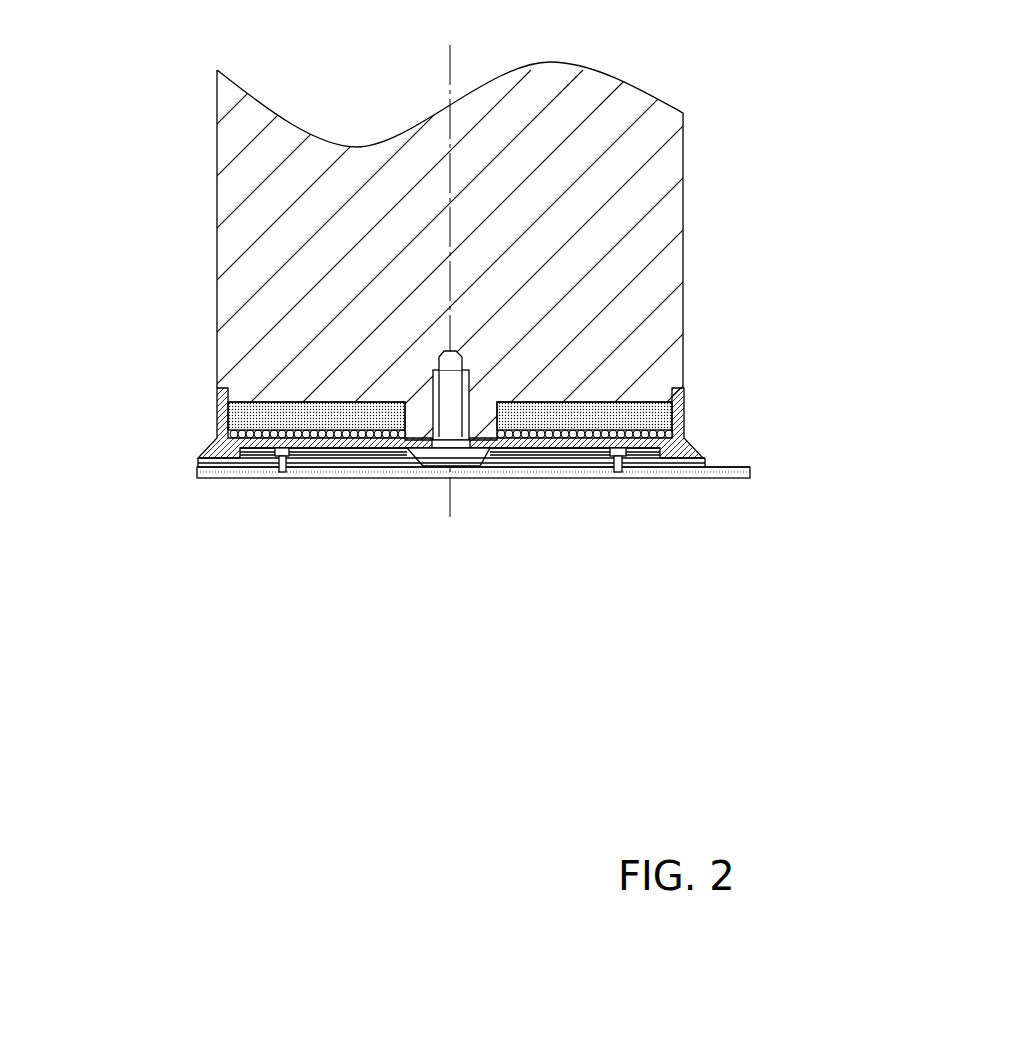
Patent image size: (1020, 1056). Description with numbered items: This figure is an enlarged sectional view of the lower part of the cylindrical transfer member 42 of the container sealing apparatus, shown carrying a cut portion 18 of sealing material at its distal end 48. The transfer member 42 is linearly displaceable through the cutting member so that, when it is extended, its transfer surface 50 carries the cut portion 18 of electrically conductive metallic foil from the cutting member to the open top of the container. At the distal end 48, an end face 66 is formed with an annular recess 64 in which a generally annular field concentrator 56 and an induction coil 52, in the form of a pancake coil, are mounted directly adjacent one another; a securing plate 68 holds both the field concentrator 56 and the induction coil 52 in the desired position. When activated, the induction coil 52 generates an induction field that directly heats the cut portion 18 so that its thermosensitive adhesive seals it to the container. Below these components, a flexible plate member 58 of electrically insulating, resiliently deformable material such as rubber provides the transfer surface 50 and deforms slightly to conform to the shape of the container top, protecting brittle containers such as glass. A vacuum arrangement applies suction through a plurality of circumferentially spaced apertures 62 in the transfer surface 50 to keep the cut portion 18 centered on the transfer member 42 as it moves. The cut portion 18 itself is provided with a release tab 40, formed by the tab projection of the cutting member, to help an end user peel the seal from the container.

The cut portion of sealing material 18 is at (688, 478).
The release tab 40 is at (737, 465).
The transfer member 42 is at (663, 173).
The distal end 48 is at (260, 305).
The transfer surface 50 is at (565, 470).
The induction coil 52 is at (320, 477).
The field concentrator 56 is at (595, 415).
The flexible plate member 58 is at (380, 477).
The circumferentially spaced apertures 62 is at (285, 478).
The annular recess 64 is at (218, 433).
The end face 66 is at (413, 437).
The securing plate 68 is at (517, 440).